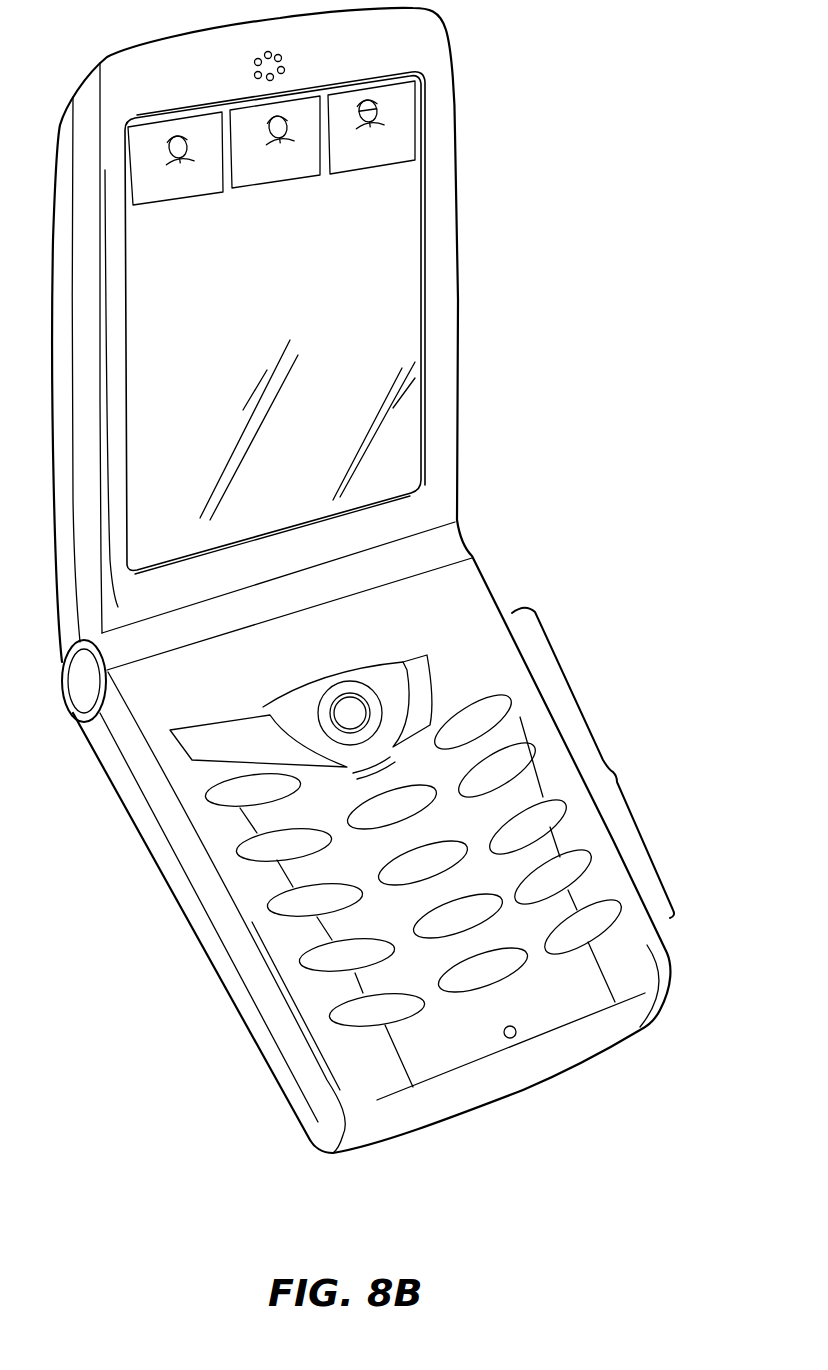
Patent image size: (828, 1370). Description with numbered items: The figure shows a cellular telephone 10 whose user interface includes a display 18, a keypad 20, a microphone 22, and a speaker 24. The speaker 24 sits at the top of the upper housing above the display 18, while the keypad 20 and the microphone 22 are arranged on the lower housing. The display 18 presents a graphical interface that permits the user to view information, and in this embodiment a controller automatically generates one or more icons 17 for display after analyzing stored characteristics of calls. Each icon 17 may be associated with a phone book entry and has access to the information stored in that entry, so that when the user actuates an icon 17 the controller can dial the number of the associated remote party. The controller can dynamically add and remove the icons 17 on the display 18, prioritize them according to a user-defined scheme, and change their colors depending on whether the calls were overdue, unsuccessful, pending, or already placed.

The cellular telephone 10 is at (607, 248).
The icons 17 is at (172, 200).
The display 18 is at (352, 347).
The keypad 20 is at (613, 772).
The microphone 22 is at (515, 1037).
The speaker 24 is at (254, 60).